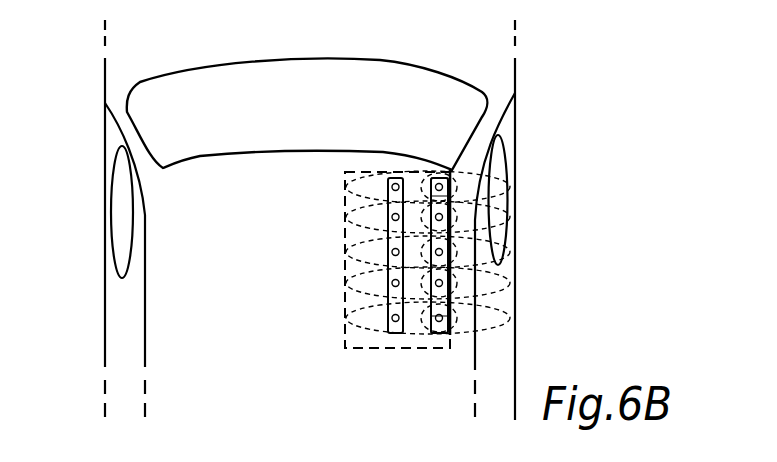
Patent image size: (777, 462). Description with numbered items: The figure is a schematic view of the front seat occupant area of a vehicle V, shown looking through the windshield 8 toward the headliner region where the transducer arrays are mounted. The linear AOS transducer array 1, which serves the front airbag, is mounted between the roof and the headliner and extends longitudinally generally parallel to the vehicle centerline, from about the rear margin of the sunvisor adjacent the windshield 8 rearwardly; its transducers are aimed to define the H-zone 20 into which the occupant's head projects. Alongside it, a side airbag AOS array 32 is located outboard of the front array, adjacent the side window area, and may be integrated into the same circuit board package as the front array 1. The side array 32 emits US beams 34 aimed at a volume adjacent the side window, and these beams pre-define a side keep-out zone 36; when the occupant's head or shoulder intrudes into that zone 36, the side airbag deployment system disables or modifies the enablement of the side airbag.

The vehicle V is at (97, 283).
The windshield 8 is at (310, 108).
The AOS transducer array 1 is at (385, 247).
The H-zone 20 is at (344, 348).
The side airbag AOS array 32 is at (450, 195).
The US beams 34 is at (511, 250).
The side keep-out zone 36 is at (477, 333).